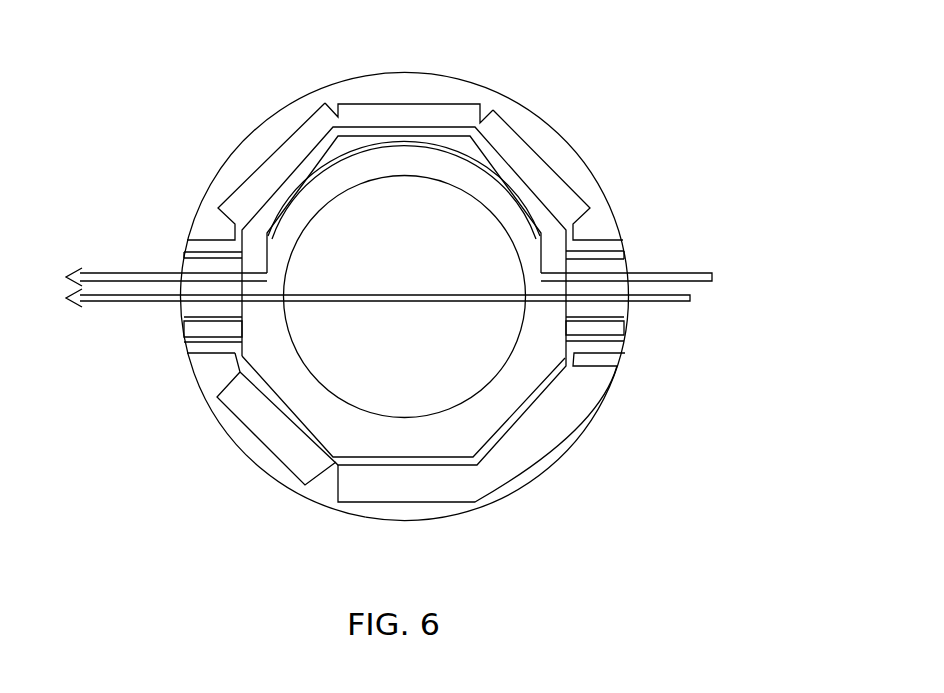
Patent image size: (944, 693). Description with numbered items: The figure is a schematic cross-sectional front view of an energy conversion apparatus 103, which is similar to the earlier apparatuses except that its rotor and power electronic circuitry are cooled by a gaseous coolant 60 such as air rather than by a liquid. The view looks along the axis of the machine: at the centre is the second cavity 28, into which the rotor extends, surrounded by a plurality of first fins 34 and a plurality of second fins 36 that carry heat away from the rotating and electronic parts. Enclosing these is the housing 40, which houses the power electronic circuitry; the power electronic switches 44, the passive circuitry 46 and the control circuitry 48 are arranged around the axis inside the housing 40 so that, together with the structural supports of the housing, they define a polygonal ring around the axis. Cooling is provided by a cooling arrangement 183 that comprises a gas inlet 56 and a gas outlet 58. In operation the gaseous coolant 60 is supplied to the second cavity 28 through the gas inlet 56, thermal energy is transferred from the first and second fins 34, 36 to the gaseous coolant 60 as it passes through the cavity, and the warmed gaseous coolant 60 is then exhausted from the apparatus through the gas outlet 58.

The second cavity 28 is at (262, 226).
The first fins 34 is at (453, 281).
The second fins 36 is at (437, 134).
The housing 40 is at (183, 254).
The power electronic switches 44 is at (405, 114).
The passive circuitry 46 is at (569, 432).
The control circuitry 48 is at (252, 442).
The gas inlet 56 is at (628, 336).
The gas outlet 58 is at (178, 303).
The gaseous coolant 60 is at (694, 298).
The energy conversion apparatus 103 is at (742, 164).
The cooling arrangement 183 is at (258, 517).